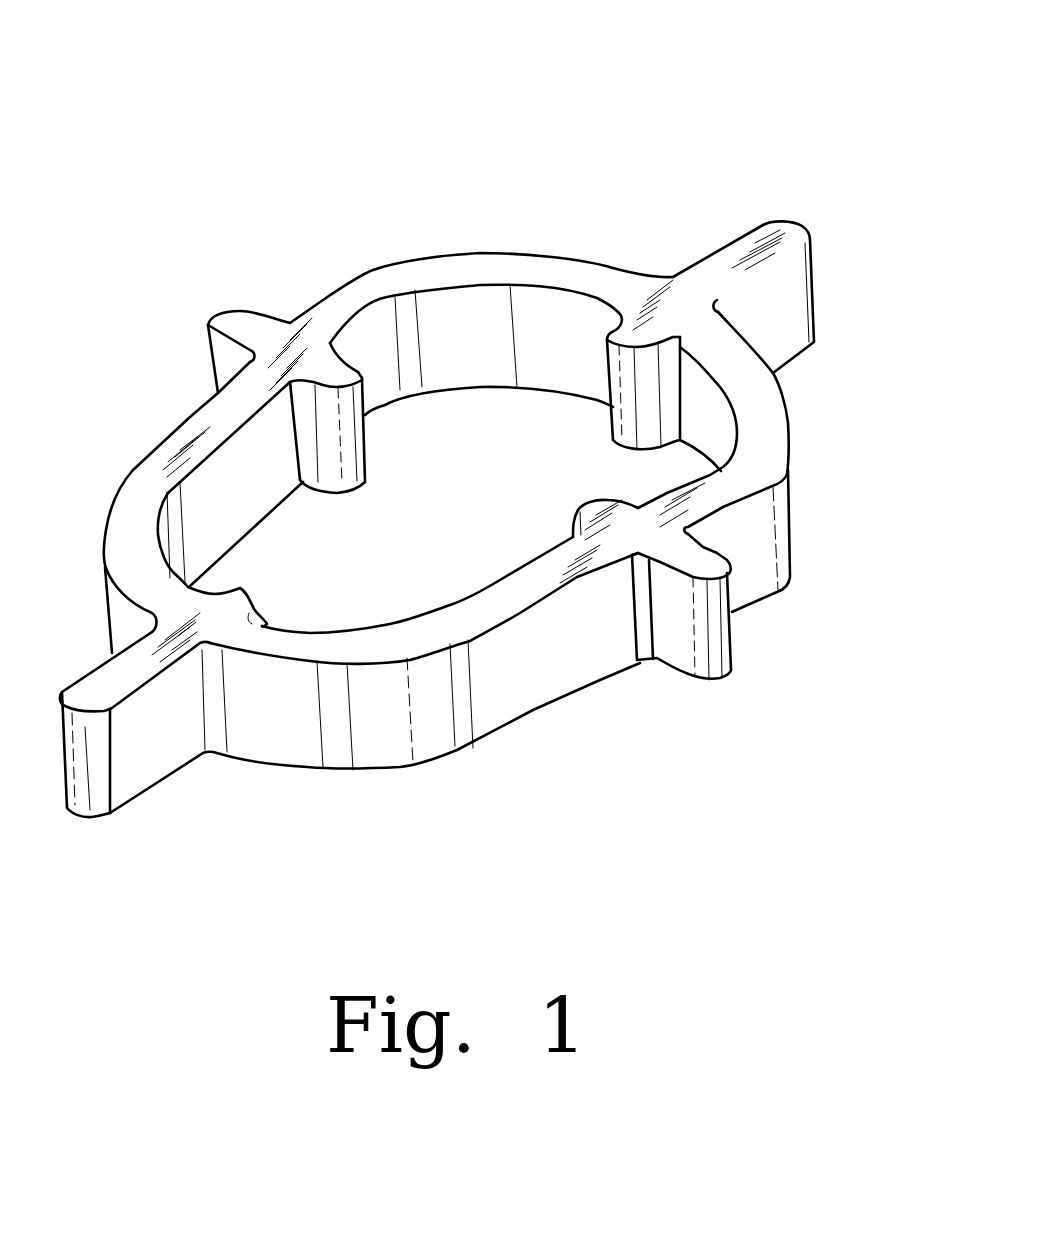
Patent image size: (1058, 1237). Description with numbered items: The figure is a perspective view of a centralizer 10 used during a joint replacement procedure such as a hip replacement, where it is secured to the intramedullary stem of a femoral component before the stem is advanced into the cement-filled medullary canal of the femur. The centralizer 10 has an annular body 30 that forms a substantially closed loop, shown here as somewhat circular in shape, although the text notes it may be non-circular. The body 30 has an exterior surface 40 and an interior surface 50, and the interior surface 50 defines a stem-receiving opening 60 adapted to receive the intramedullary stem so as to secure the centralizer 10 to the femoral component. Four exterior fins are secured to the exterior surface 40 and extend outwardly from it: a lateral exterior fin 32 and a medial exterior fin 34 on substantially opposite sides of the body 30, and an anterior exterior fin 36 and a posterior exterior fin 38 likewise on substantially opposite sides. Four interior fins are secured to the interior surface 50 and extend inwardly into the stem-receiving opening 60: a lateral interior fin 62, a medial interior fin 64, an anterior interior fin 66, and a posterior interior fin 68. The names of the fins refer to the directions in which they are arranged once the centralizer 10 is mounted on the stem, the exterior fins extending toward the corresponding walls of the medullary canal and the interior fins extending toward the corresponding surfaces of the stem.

The centralizer 10 is at (672, 108).
The annular body 30 is at (433, 730).
The lateral exterior fin 32 is at (790, 300).
The medial exterior fin 34 is at (133, 773).
The anterior exterior fin 36 is at (237, 320).
The posterior exterior fin 38 is at (730, 643).
The exterior surface 40 is at (540, 690).
The interior surface 50 is at (430, 312).
The stem-receiving opening 60 is at (455, 420).
The lateral interior fin 62 is at (623, 416).
The medial interior fin 64 is at (244, 601).
The anterior interior fin 66 is at (360, 450).
The posterior interior fin 68 is at (583, 510).